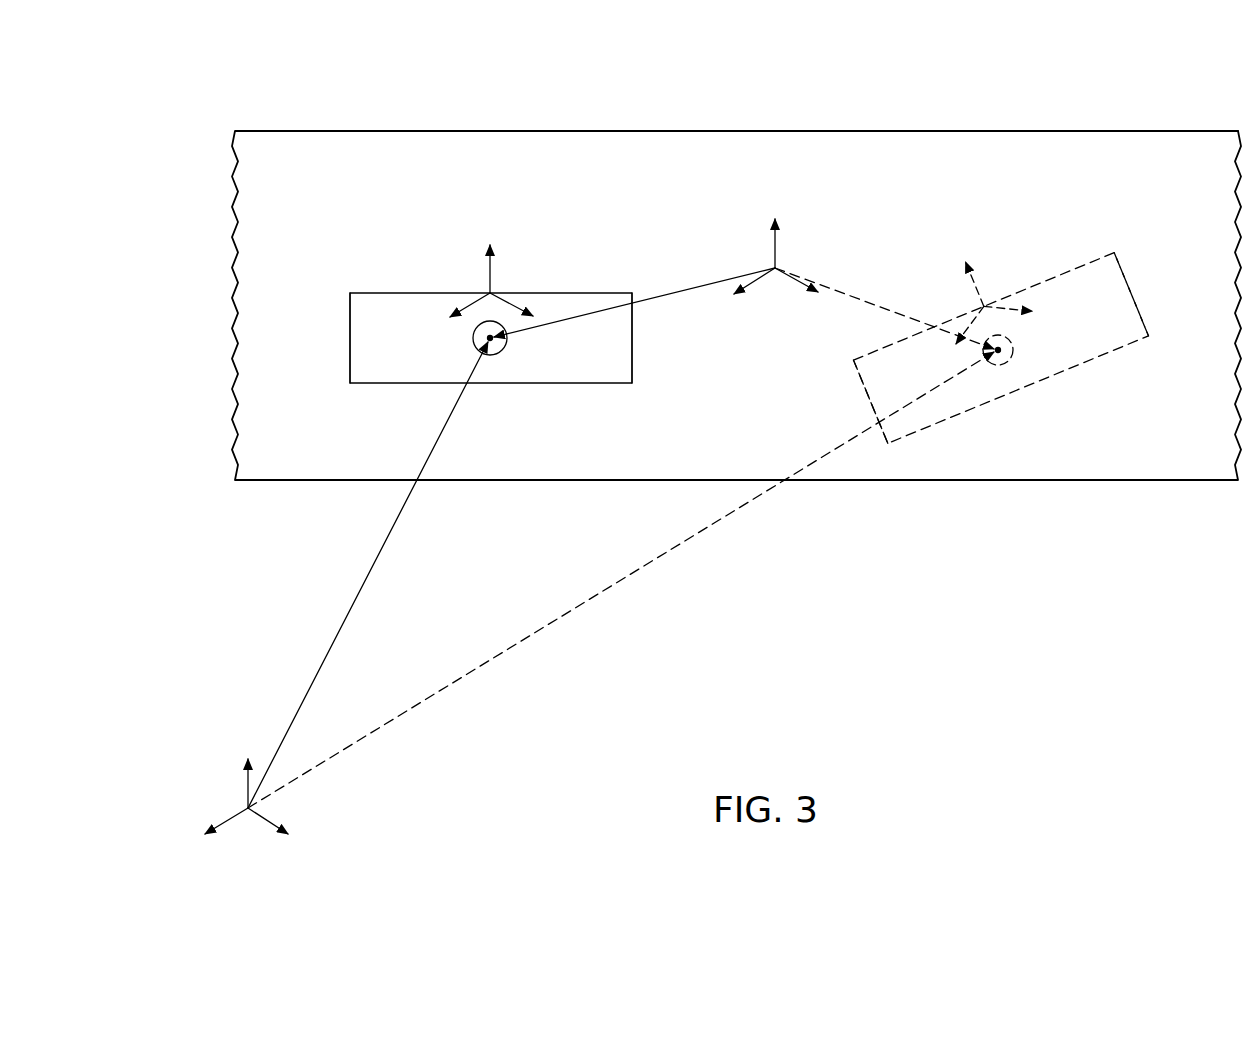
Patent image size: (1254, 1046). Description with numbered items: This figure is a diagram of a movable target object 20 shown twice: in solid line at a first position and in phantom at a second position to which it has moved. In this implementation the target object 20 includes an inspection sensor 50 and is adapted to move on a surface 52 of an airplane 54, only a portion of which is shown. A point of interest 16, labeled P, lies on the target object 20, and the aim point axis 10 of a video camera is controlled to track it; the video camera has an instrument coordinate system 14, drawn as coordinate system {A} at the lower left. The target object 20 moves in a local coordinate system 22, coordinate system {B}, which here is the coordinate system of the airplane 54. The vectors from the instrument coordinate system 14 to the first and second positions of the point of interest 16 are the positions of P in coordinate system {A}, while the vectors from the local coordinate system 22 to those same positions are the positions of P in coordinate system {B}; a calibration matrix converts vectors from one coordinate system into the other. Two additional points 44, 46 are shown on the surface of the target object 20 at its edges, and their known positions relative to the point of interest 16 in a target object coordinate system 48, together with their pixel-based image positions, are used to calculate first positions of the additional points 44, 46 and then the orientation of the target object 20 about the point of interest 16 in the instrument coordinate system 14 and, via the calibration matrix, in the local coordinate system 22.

The aim point axis 10 is at (375, 560).
The instrument coordinate system 14 is at (240, 815).
The point of interest 16 is at (474, 338).
The target object 20 is at (749, 307).
The local coordinate system 22 is at (775, 245).
The additional point 44 is at (374, 304).
The additional point 46 is at (605, 304).
The target object coordinate system 48 is at (490, 269).
The inspection sensor 50 is at (479, 345).
The surface of an airplane 52 is at (1165, 143).
The airplane 54 is at (736, 255).